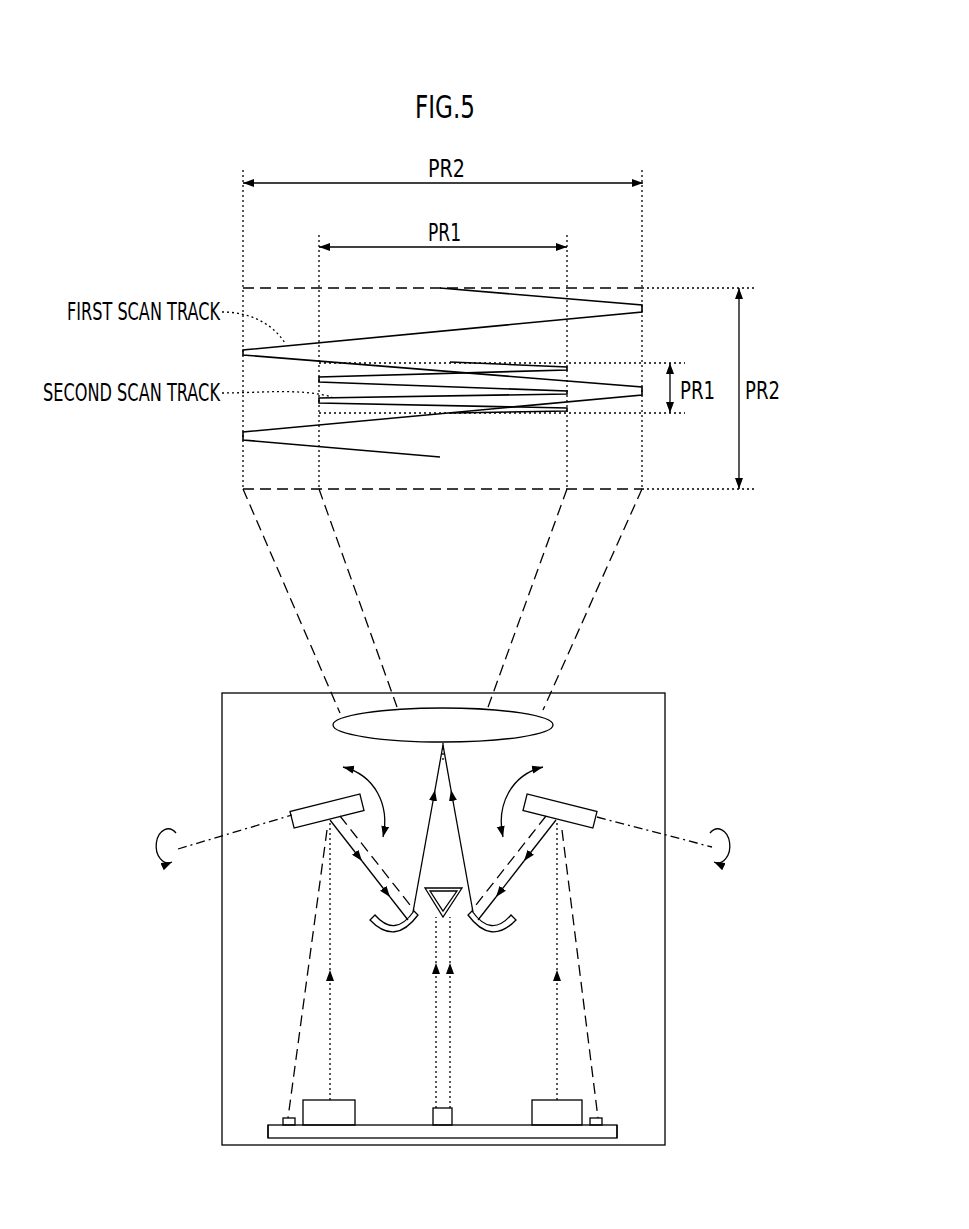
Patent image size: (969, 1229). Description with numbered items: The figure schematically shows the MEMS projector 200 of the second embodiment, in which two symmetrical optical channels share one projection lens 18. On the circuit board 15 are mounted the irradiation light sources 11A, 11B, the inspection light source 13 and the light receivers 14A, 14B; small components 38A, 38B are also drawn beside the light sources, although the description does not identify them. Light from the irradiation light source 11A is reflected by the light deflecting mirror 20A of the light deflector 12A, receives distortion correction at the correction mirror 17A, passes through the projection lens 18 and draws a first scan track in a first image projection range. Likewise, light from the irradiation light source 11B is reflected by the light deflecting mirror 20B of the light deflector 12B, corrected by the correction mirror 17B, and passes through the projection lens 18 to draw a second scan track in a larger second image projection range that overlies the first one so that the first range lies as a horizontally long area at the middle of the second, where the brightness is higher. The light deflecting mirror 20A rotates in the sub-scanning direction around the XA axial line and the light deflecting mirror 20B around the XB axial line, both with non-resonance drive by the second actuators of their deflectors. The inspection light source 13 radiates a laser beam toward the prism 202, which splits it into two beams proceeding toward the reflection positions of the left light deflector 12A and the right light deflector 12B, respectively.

The MEMS projector 200 is at (653, 688).
The projection lens 18 is at (335, 727).
The prism 202 is at (443, 887).
The light deflector 12A is at (290, 812).
The light deflector 12B is at (597, 815).
The light deflecting mirror 20A is at (312, 800).
The light deflecting mirror 20B is at (570, 797).
The XA axial line XA is at (178, 830).
The XB axial line XB is at (712, 830).
The correction mirror 17A is at (394, 937).
The correction mirror 17B is at (492, 937).
The irradiation light source 11A is at (342, 1100).
The irradiation light source 11B is at (540, 1100).
The inspection light source 13 is at (430, 1118).
The light receiver 14A is at (270, 1124).
The light receiver 14B is at (620, 1124).
The circuit board 15 is at (618, 1130).
The first photodetector 38A is at (288, 1118).
The second photodetector 38B is at (598, 1118).